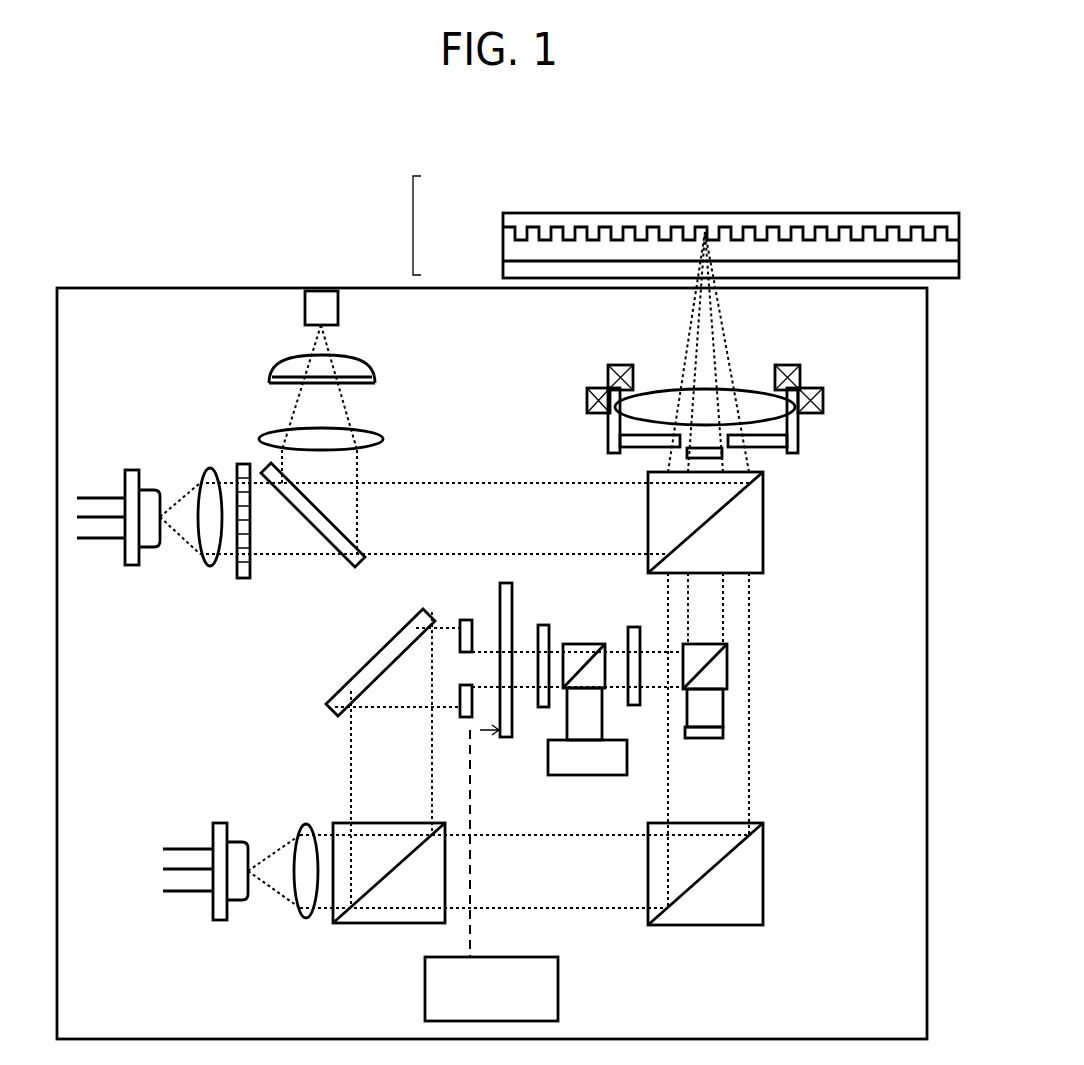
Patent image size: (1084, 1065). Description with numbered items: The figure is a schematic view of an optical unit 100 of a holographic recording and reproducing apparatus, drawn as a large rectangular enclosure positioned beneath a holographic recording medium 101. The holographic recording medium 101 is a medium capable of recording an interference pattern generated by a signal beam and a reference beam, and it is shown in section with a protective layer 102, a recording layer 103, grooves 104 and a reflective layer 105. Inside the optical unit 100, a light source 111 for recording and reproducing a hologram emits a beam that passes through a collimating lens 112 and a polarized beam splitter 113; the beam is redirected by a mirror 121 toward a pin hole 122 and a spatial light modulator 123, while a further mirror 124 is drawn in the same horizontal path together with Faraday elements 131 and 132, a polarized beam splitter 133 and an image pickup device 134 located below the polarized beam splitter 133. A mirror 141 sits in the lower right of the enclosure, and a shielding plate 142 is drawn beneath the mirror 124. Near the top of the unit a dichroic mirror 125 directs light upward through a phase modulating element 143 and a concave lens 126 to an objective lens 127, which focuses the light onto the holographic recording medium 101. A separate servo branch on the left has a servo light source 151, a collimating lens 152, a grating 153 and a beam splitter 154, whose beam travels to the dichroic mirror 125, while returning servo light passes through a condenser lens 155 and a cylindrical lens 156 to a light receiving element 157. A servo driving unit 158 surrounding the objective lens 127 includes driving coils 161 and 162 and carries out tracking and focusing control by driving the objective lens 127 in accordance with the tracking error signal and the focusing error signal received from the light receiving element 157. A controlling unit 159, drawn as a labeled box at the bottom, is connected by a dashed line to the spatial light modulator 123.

The optical unit 100 is at (178, 287).
The holographic recording medium 101 is at (659, 227).
The protective layer 102 is at (503, 268).
The recording layer 103 is at (503, 248).
The grooves 104 is at (503, 232).
The reflective layer 105 is at (503, 222).
The light source 111 is at (219, 920).
The collimating lens 112 is at (305, 918).
The polarized beam splitter 113 is at (390, 923).
The mirror 121 is at (327, 705).
The pin hole 122 is at (465, 620).
The spatial light modulator 123 is at (507, 737).
The mirror 124 is at (727, 670).
The dichroic mirror 125 is at (765, 560).
The concave lens 126 is at (700, 461).
The objective lens 127 is at (750, 395).
The Faraday element 131 is at (543, 625).
The Faraday element 132 is at (634, 627).
The polarized beam splitter 133 is at (583, 644).
The image pickup device 134 is at (585, 775).
The mirror 141 is at (700, 925).
The shielding plate 142 is at (723, 733).
The phase modulating element 143 is at (760, 450).
The servo light source 151 is at (132, 565).
The collimating lens 152 is at (210, 567).
The grating 153 is at (243, 578).
The beam splitter 154 is at (345, 575).
The condenser lens 155 is at (383, 439).
The cylindrical lens 156 is at (375, 376).
The light receiving element 157 is at (338, 302).
The servo driving unit 158 is at (815, 436).
The controlling unit 159 is at (558, 973).
The driving coil 161 is at (800, 379).
The driving coil 162 is at (823, 404).